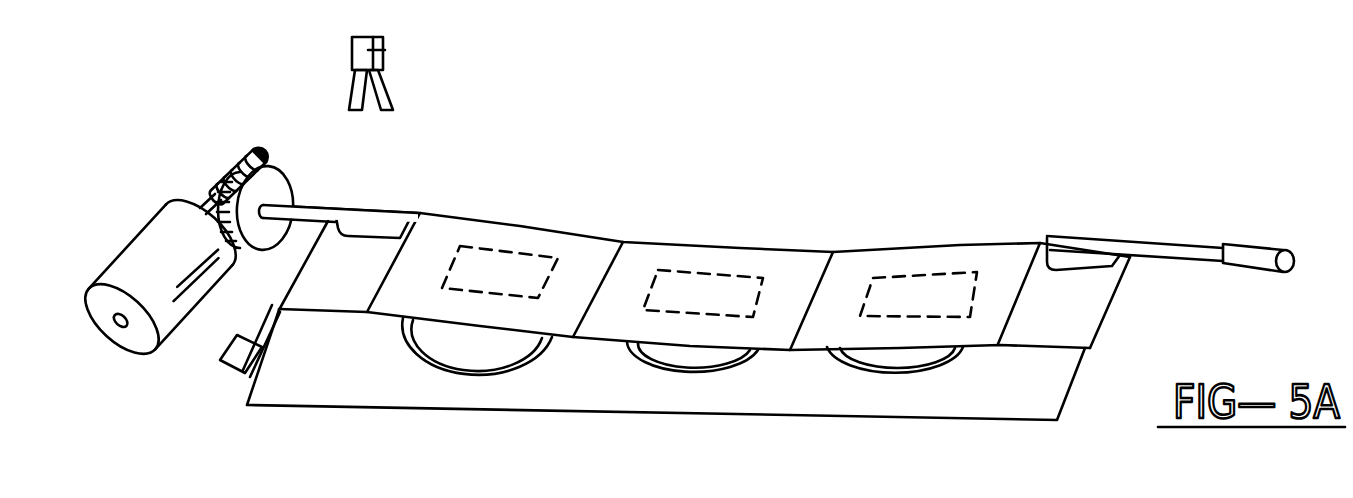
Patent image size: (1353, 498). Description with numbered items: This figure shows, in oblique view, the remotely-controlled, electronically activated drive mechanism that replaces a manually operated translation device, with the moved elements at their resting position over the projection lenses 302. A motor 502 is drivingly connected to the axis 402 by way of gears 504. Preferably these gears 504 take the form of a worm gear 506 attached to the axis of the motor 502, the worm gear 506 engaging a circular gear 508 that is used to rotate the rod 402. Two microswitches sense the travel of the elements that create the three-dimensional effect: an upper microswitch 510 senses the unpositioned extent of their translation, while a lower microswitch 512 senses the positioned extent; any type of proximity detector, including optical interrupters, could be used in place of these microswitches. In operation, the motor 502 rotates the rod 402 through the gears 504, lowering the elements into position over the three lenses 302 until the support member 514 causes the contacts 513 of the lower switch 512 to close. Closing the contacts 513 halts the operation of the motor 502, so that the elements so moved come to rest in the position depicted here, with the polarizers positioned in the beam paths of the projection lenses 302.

The projection lenses 302 is at (468, 350).
The axis 402 is at (303, 183).
The motor 502 is at (165, 252).
The gears 504 is at (277, 98).
The worm gear 506 is at (256, 158).
The circular gear 508 is at (281, 172).
The upper microswitch 510 is at (385, 50).
The lower microswitch 512 is at (236, 374).
The contacts 513 is at (266, 338).
The support member 514 is at (324, 296).